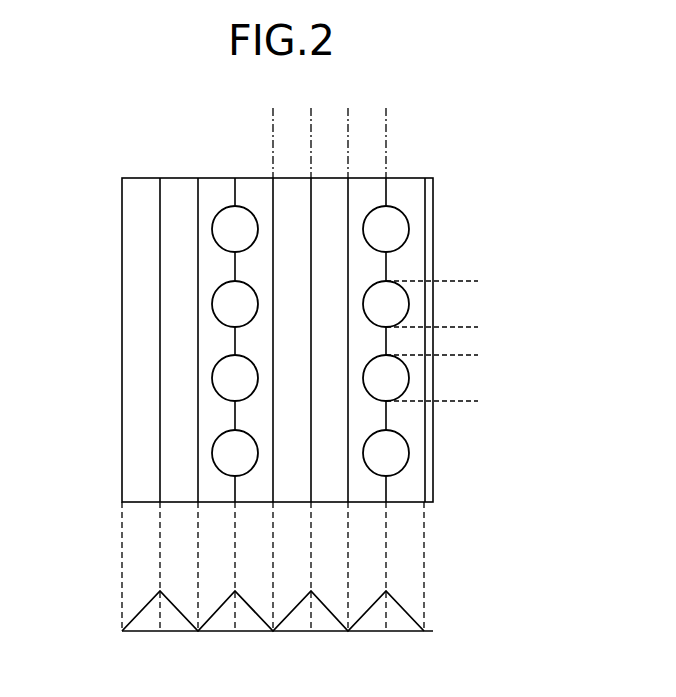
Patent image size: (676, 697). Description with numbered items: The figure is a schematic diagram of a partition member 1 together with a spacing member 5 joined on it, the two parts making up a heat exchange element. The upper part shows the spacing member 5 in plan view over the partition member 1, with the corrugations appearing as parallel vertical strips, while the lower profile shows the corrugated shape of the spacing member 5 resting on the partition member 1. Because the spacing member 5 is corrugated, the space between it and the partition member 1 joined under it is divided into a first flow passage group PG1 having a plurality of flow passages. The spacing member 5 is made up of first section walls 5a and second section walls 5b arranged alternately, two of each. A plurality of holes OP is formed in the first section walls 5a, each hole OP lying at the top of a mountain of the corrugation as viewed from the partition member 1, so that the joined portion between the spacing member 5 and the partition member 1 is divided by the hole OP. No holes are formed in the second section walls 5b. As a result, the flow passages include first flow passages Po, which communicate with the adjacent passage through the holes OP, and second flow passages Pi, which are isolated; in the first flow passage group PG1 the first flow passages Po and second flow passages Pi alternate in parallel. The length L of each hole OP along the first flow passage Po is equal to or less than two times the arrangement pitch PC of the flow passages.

The partition member 1 is at (428, 194).
The spacing member 5 is at (139, 197).
The hole OP is at (224, 229).
The arrangement pitch PC is at (309, 119).
The length of hole L is at (464, 281).
The first section wall 5a is at (358, 633).
The second section wall 5b is at (129, 633).
The second flow passage Pi is at (161, 633).
The first flow passage Po is at (236, 633).
The first flow passage group PG1 is at (311, 617).